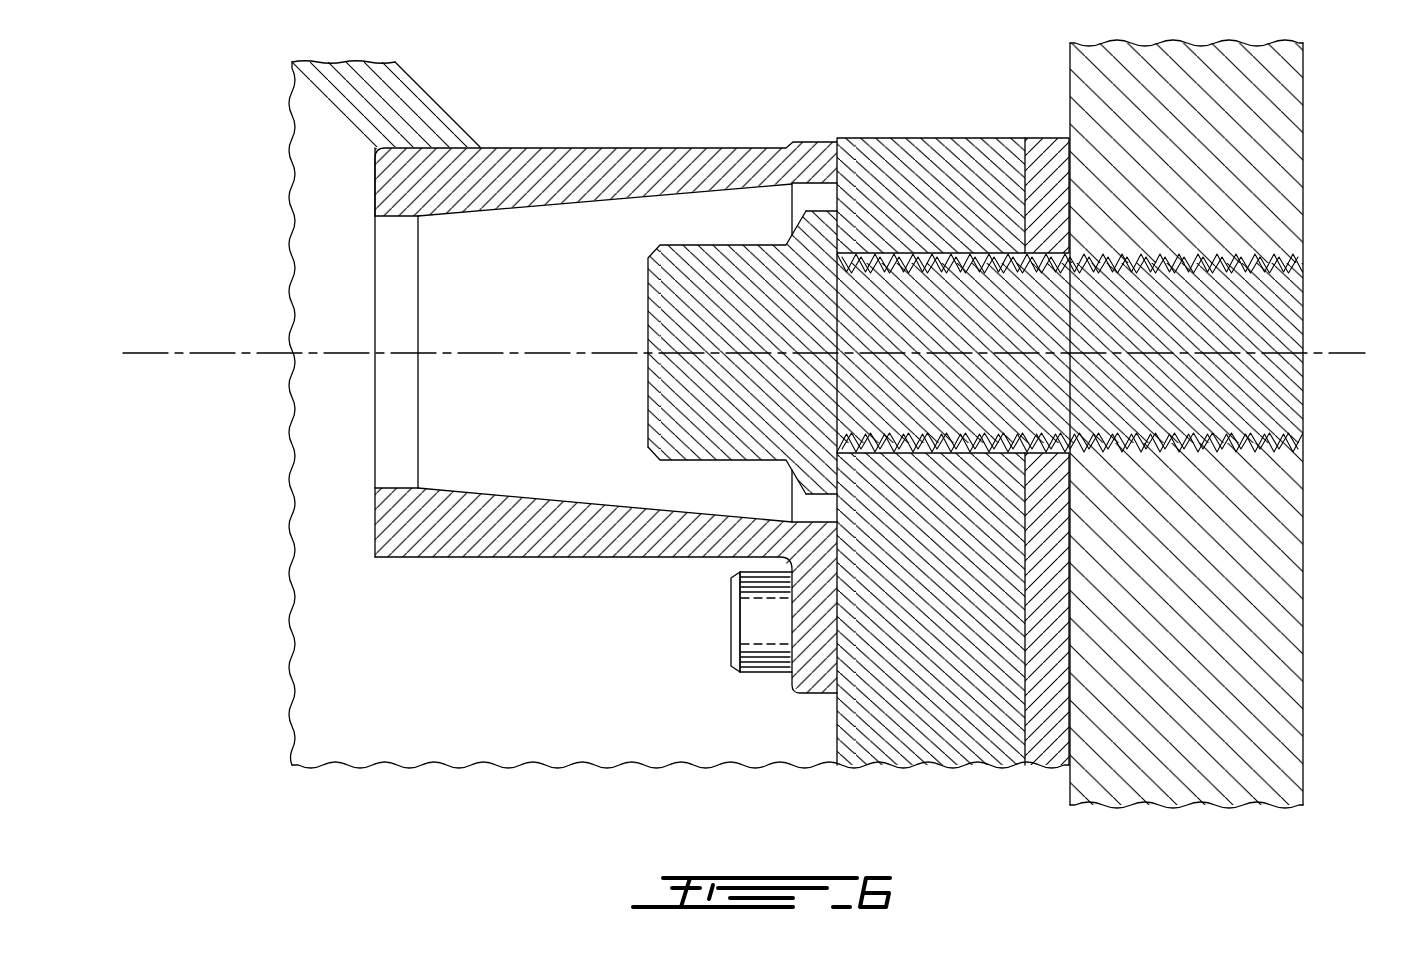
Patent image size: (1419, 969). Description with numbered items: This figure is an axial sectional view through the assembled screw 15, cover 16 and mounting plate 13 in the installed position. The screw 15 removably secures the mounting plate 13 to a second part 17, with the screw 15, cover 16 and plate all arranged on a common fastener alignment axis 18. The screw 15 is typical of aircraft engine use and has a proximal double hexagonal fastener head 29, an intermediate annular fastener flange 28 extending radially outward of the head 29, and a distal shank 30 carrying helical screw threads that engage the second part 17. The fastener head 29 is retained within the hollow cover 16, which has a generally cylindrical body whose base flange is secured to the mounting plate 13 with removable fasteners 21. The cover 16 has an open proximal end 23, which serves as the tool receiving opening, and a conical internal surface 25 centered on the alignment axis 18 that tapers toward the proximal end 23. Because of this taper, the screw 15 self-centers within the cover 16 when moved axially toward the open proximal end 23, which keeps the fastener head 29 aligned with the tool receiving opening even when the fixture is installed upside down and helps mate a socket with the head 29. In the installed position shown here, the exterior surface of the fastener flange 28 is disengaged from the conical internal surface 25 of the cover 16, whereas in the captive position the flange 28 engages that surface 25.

The mounting plate 13 is at (950, 732).
The screw 15 is at (920, 385).
The cover 16 is at (498, 147).
The second part 17 is at (1242, 113).
The fastener alignment axis 18 is at (147, 352).
The removable fastener 21 is at (738, 623).
The open proximal end 23 is at (375, 273).
The conical internal surface 25 is at (565, 200).
The fastener flange 28 is at (817, 209).
The fastener head 29 is at (713, 245).
The shank 30 is at (1205, 447).